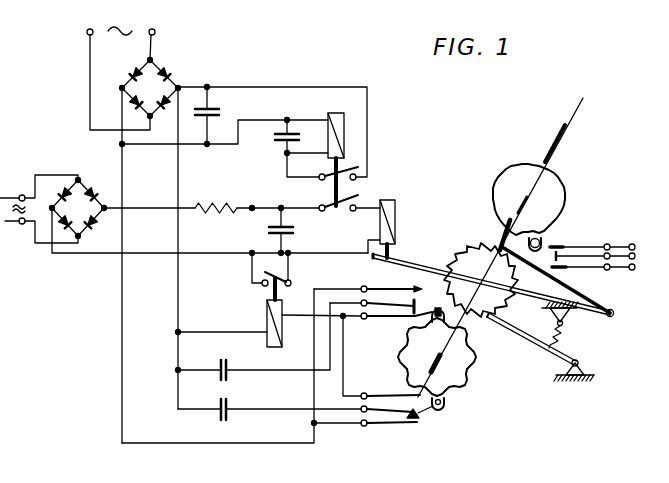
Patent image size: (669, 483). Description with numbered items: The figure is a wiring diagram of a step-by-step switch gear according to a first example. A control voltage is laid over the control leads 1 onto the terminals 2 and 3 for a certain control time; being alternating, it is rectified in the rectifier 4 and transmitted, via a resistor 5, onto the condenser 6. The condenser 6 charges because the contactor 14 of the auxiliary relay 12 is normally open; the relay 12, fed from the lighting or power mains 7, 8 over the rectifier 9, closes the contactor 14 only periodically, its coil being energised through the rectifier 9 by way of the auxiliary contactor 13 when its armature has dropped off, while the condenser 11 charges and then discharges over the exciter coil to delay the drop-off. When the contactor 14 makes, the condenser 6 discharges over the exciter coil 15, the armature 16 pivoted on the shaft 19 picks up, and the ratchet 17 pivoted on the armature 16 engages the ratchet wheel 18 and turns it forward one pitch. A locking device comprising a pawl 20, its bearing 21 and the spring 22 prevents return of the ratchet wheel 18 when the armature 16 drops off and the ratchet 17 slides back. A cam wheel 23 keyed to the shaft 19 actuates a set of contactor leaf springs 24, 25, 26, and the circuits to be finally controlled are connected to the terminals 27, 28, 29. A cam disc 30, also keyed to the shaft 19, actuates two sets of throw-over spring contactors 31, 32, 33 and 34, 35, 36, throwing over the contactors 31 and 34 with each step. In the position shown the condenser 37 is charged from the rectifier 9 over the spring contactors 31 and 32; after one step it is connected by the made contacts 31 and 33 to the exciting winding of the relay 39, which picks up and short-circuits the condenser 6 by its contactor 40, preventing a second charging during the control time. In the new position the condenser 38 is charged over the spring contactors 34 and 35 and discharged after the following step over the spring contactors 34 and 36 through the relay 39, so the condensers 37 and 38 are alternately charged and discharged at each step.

The control leads 1 is at (12, 212).
The terminal 2 is at (22, 195).
The terminal 3 is at (22, 224).
The rectifier 4 is at (77, 203).
The resistor 5 is at (231, 215).
The condenser 6 is at (292, 226).
The lighting or power mains 7 is at (87, 32).
The lighting or power mains 8 is at (155, 30).
The rectifier 9 is at (168, 82).
The condenser 11 is at (284, 142).
The auxiliary relay 12 is at (332, 112).
The auxiliary contactor 13 is at (358, 167).
The contactor 14 is at (358, 195).
The exciter coil 15 is at (396, 222).
The armature 16 is at (420, 267).
The ratchet 17 is at (548, 286).
The ratchet wheel 18 is at (473, 260).
The shaft 19 is at (562, 128).
The pawl 20 is at (527, 335).
The bearing 21 is at (583, 368).
The spring 22 is at (566, 333).
The cam wheel 23 is at (553, 188).
The contactor leaf spring 24 is at (549, 234).
The contactor leaf spring 25 is at (577, 246).
The contactor leaf spring 26 is at (575, 267).
The terminal 27 is at (632, 300).
The terminal 28 is at (626, 313).
The terminal 29 is at (630, 270).
The cam disc 30 is at (470, 372).
The throw-over spring contactor 31 is at (425, 417).
The spring contactor 32 is at (398, 427).
The spring contactor 33 is at (378, 388).
The throw-over spring contactor 34 is at (380, 306).
The spring contactor 35 is at (385, 288).
The spring contactor 36 is at (404, 318).
The condenser 37 is at (229, 406).
The condenser 38 is at (228, 366).
The relay 39 is at (271, 311).
The contactor 40 is at (262, 287).